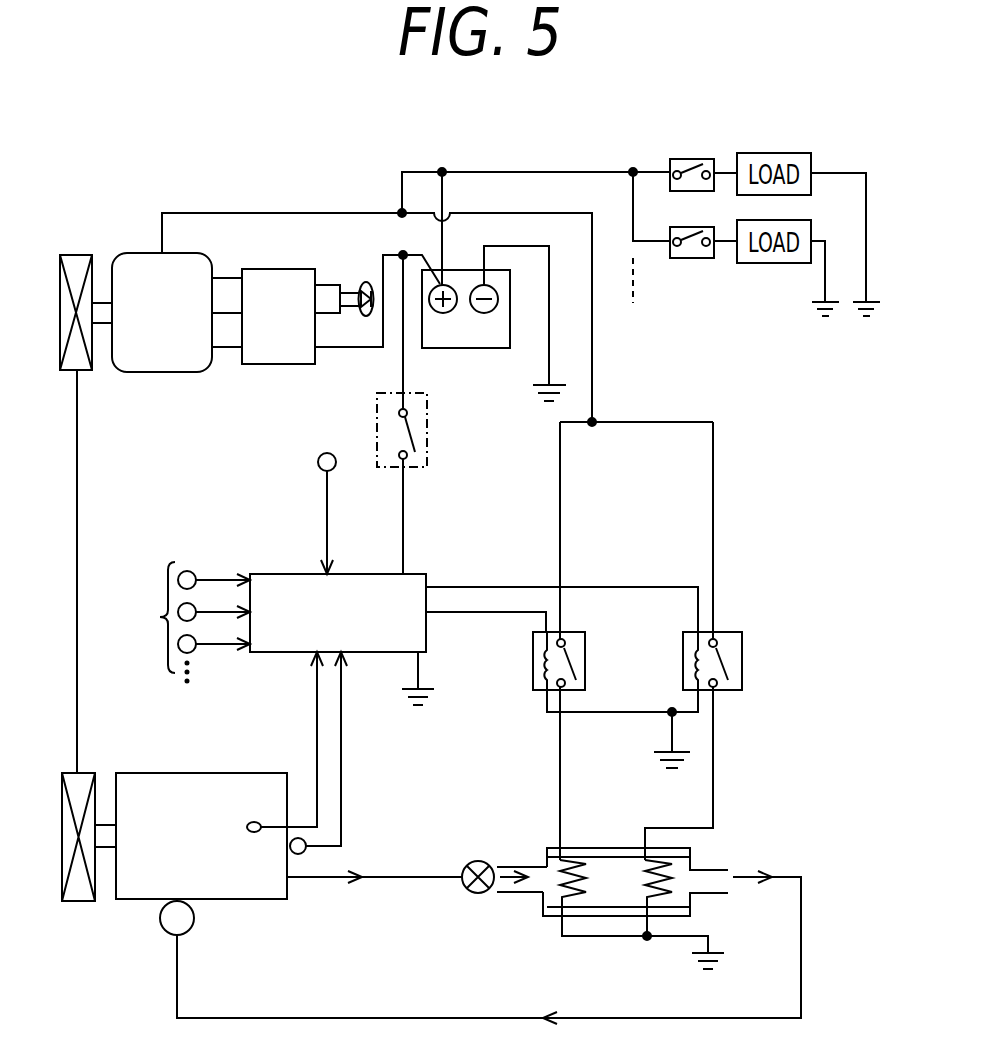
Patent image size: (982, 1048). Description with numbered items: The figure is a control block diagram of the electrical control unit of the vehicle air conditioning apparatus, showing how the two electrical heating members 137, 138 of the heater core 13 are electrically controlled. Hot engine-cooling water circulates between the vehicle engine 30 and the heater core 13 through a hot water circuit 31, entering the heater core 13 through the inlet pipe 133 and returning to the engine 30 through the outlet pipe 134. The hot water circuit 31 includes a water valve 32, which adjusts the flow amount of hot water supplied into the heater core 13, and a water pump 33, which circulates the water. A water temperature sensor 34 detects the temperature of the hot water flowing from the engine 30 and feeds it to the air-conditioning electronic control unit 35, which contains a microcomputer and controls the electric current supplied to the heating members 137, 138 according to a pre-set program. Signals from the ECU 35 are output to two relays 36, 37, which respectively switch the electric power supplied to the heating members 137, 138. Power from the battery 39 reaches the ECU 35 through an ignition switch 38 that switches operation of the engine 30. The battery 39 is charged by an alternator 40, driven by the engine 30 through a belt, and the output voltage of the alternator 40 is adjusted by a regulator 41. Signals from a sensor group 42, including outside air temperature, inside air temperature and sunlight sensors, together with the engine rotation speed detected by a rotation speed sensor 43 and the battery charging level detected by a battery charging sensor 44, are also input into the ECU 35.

The heater core 13 is at (556, 932).
The vehicle engine 30 is at (143, 787).
The hot water circuit 31 is at (410, 880).
The water valve 32 is at (475, 860).
The water pump 33 is at (163, 926).
The water temperature sensor 34 is at (251, 822).
The air-conditioning electronic control unit (ECU) 35 is at (283, 573).
The relay 36 is at (533, 668).
The relay 37 is at (742, 668).
The ignition switch 38 is at (428, 440).
The battery 39 is at (477, 338).
The alternator 40 is at (142, 376).
The regulator 41 is at (258, 368).
The sensor group 42 is at (189, 622).
The rotation speed sensor 43 is at (306, 852).
The battery charging sensor 44 is at (327, 452).
The inlet pipe 133 is at (537, 885).
The outlet pipe 134 is at (720, 868).
The electrical heating member 137 is at (660, 897).
The electrical heating member 138 is at (572, 857).